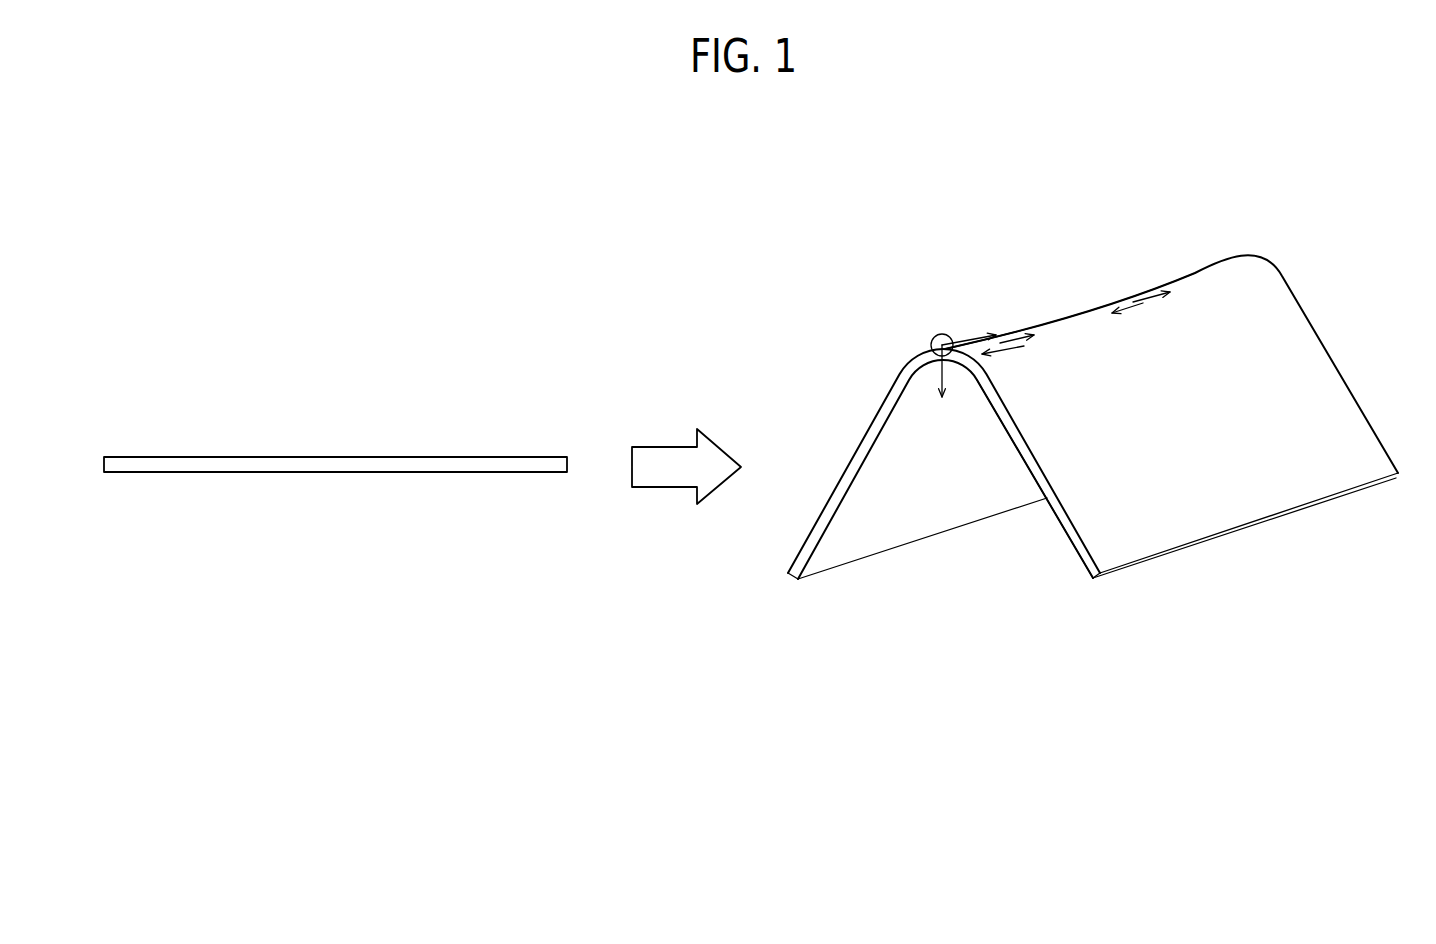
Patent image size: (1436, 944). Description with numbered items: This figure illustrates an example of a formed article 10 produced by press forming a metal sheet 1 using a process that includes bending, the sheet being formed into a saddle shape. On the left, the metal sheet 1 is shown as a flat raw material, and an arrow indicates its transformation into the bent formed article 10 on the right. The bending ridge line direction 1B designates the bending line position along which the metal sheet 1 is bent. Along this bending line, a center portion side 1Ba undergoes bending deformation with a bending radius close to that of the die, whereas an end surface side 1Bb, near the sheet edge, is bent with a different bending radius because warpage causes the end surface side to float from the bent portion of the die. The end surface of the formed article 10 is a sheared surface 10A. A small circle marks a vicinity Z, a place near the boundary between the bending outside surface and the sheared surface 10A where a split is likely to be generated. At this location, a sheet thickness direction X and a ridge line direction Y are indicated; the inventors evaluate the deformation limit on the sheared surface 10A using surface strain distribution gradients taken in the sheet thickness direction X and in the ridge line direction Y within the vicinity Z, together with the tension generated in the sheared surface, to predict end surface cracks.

The metal sheet 1 is at (383, 457).
The formed article 10 is at (1310, 270).
The sheared surface 10A is at (1058, 513).
The bending ridge line direction 1B is at (1185, 273).
The center portion side 1Ba is at (1140, 297).
The end surface side 1Bb is at (1004, 336).
The sheet thickness direction X is at (940, 360).
The ridge line direction Y is at (968, 338).
The split generation vicinity Z is at (931, 345).